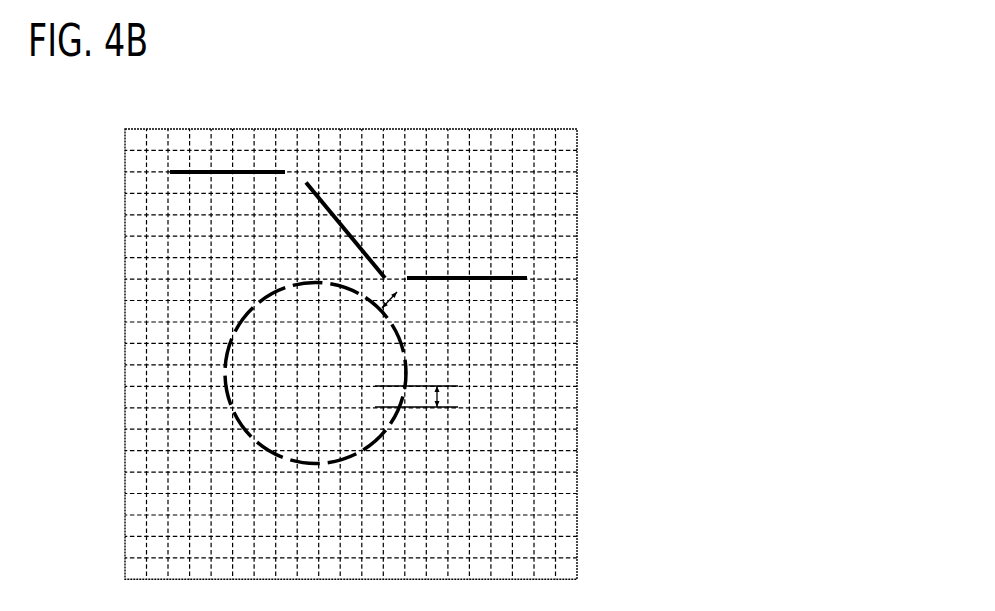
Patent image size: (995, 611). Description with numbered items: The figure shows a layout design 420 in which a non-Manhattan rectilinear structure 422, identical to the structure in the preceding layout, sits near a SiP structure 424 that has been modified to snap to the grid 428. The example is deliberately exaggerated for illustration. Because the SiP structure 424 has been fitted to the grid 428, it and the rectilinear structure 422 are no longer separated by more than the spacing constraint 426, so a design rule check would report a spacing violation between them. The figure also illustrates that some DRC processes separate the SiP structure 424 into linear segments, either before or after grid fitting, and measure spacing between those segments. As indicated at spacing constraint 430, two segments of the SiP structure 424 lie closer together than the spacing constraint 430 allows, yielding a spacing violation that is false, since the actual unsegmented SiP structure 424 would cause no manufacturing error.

The layout design 420 is at (350, 130).
The non-Manhattan rectilinear structure 422 is at (248, 170).
The SiP structure 424 is at (230, 390).
The spacing constraint 426 is at (355, 260).
The grid 428 is at (553, 183).
The spacing constraint 430 is at (443, 395).